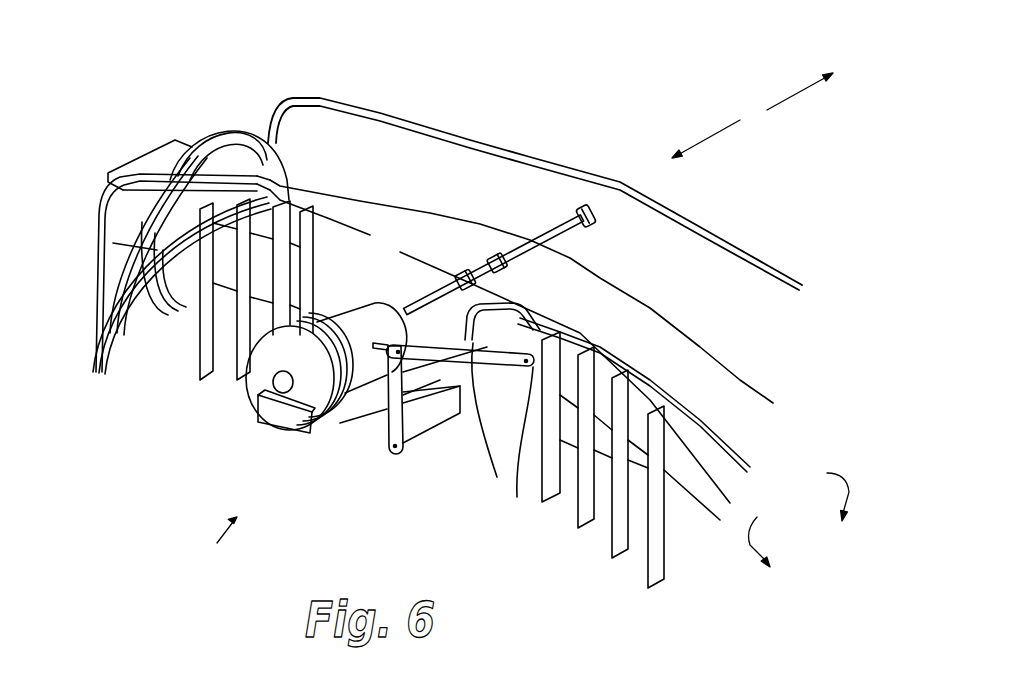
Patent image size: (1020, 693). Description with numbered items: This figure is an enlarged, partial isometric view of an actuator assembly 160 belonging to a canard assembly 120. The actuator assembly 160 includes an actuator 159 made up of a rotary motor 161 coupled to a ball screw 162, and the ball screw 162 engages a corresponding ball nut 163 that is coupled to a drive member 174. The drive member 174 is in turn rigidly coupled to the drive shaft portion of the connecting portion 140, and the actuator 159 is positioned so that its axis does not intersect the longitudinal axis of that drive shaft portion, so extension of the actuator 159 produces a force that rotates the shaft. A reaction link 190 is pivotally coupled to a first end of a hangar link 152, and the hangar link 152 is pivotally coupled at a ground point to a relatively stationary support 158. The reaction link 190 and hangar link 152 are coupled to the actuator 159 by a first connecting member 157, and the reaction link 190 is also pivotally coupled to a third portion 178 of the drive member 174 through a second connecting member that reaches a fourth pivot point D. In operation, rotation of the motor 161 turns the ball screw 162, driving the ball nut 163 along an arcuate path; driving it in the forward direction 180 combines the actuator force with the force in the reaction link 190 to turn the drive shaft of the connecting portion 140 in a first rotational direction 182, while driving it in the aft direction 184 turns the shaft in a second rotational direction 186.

The canard assembly 120 is at (137, 76).
The connecting portion 140 is at (588, 288).
The hangar link 152 is at (390, 418).
The first connecting member 157 is at (383, 345).
The relatively stationary support 158 is at (363, 427).
The actuator 159 is at (460, 250).
The actuator assembly 160 is at (217, 543).
The rotary motor 161 is at (268, 373).
The ball screw 162 is at (537, 272).
The ball nut 163 is at (550, 243).
The drive member 174 is at (500, 472).
The third portion of the drive member 178 is at (518, 335).
The forward direction 180 is at (803, 93).
The first rotational direction 182 is at (849, 492).
The aft direction 184 is at (710, 143).
The second rotational direction 186 is at (750, 555).
The reaction link 190 is at (490, 430).
The fourth pivot point D is at (517, 497).